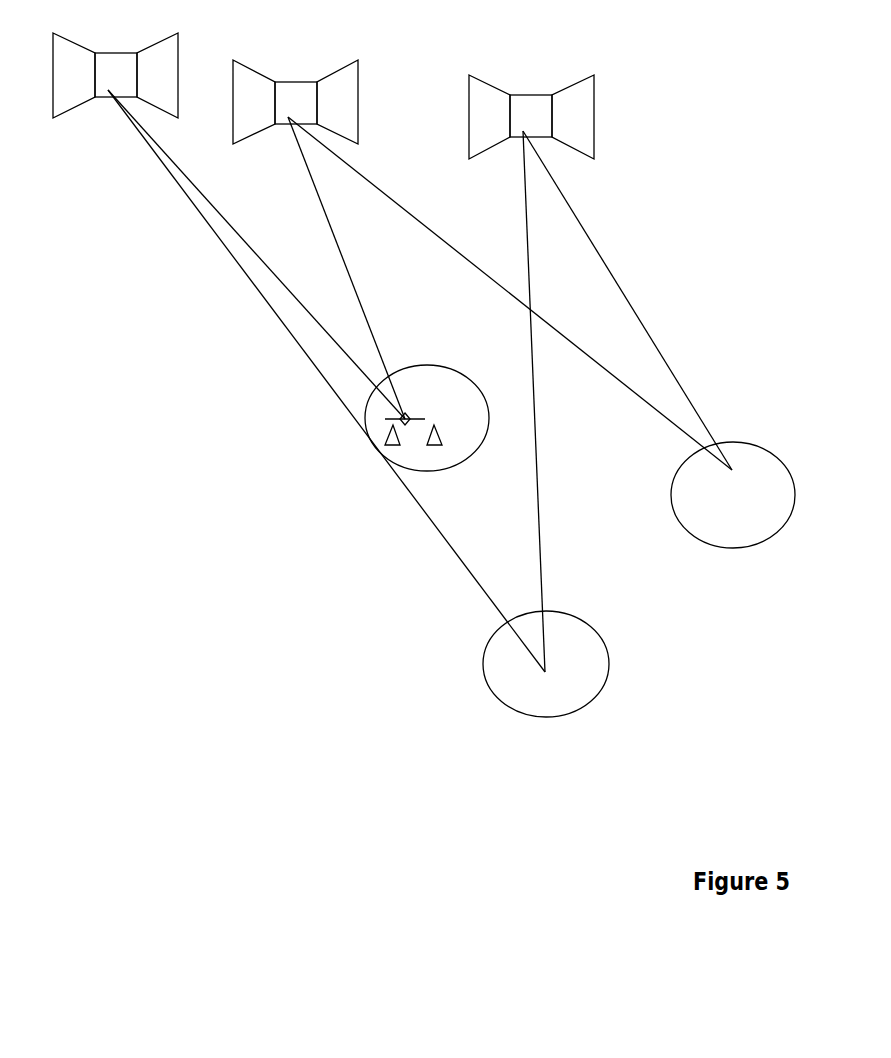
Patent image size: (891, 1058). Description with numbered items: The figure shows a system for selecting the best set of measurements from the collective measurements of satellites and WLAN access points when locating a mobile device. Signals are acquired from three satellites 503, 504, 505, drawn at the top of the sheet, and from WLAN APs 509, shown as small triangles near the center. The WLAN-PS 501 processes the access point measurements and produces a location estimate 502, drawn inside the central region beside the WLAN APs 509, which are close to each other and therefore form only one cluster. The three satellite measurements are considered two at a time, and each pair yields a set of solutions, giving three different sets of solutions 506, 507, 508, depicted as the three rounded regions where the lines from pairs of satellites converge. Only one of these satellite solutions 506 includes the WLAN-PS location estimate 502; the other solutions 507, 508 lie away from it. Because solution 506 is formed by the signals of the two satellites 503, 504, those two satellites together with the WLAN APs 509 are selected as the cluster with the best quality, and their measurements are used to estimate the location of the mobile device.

The WLAN-PS 501 is at (482, 412).
The location estimate 502 is at (421, 419).
The satellite 503 is at (115, 73).
The satellite 504 is at (295, 101).
The satellite 505 is at (531, 115).
The satellite solution 506 is at (428, 364).
The satellite solution 507 is at (733, 472).
The satellite solution 508 is at (594, 653).
The WLAN APs 509 is at (385, 428).